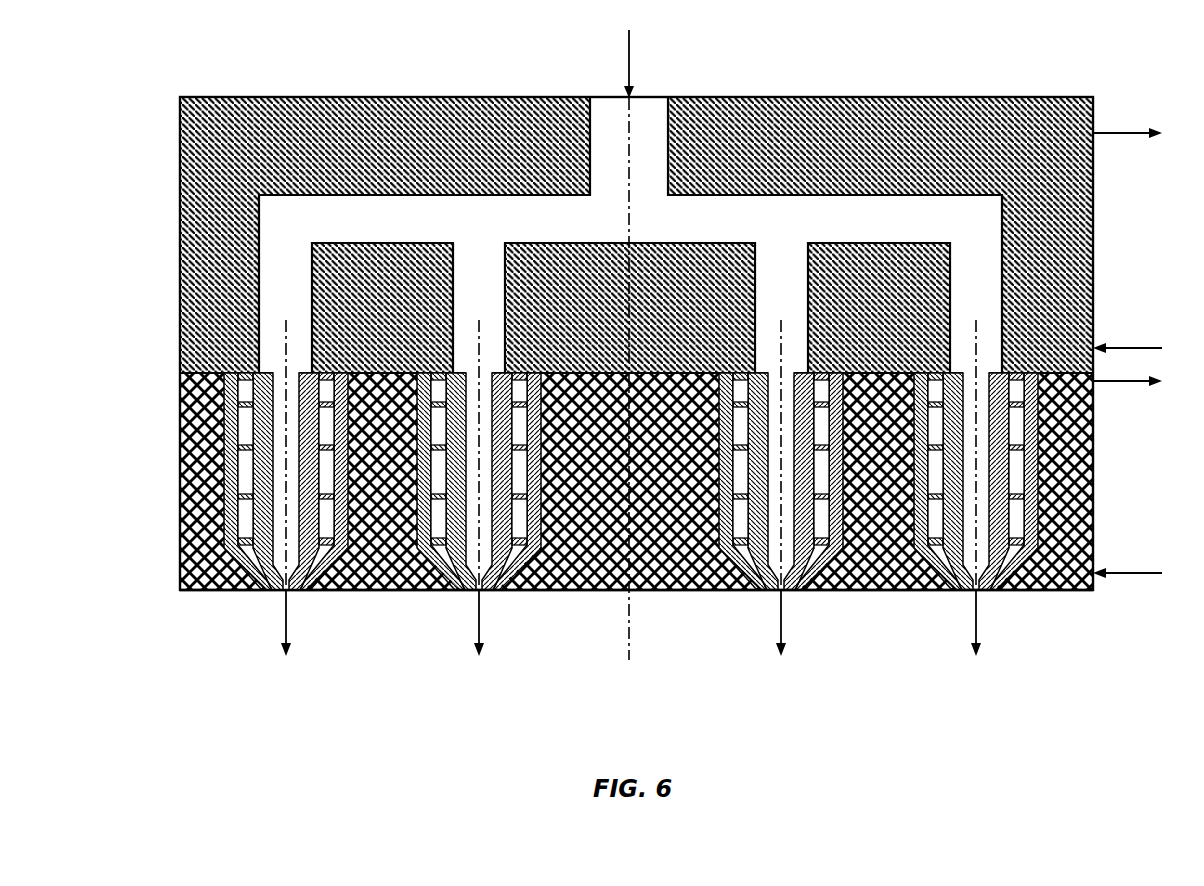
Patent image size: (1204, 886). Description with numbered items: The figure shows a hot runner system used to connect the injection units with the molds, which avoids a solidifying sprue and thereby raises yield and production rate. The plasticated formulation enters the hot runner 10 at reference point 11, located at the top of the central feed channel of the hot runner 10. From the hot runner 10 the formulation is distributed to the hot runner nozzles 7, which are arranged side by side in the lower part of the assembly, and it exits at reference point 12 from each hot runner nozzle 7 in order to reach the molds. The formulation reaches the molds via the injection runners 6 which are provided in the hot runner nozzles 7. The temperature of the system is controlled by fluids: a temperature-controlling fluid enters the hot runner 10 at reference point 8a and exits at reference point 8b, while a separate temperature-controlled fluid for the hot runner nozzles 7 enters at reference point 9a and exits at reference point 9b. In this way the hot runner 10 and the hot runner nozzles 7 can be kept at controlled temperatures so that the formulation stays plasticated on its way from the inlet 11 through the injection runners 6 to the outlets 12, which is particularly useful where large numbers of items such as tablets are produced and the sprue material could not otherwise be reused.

The injection runner 6 is at (180, 490).
The hot runner nozzle 7 is at (180, 532).
The hot runner fluid inlet 8a is at (1120, 348).
The hot runner fluid outlet 8b is at (1120, 136).
The nozzle fluid inlet 9a is at (1120, 573).
The nozzle fluid outlet 9b is at (1120, 383).
The hot runner 10 is at (278, 130).
The formulation inlet 11 is at (627, 52).
The formulation outlet 12 is at (283, 613).